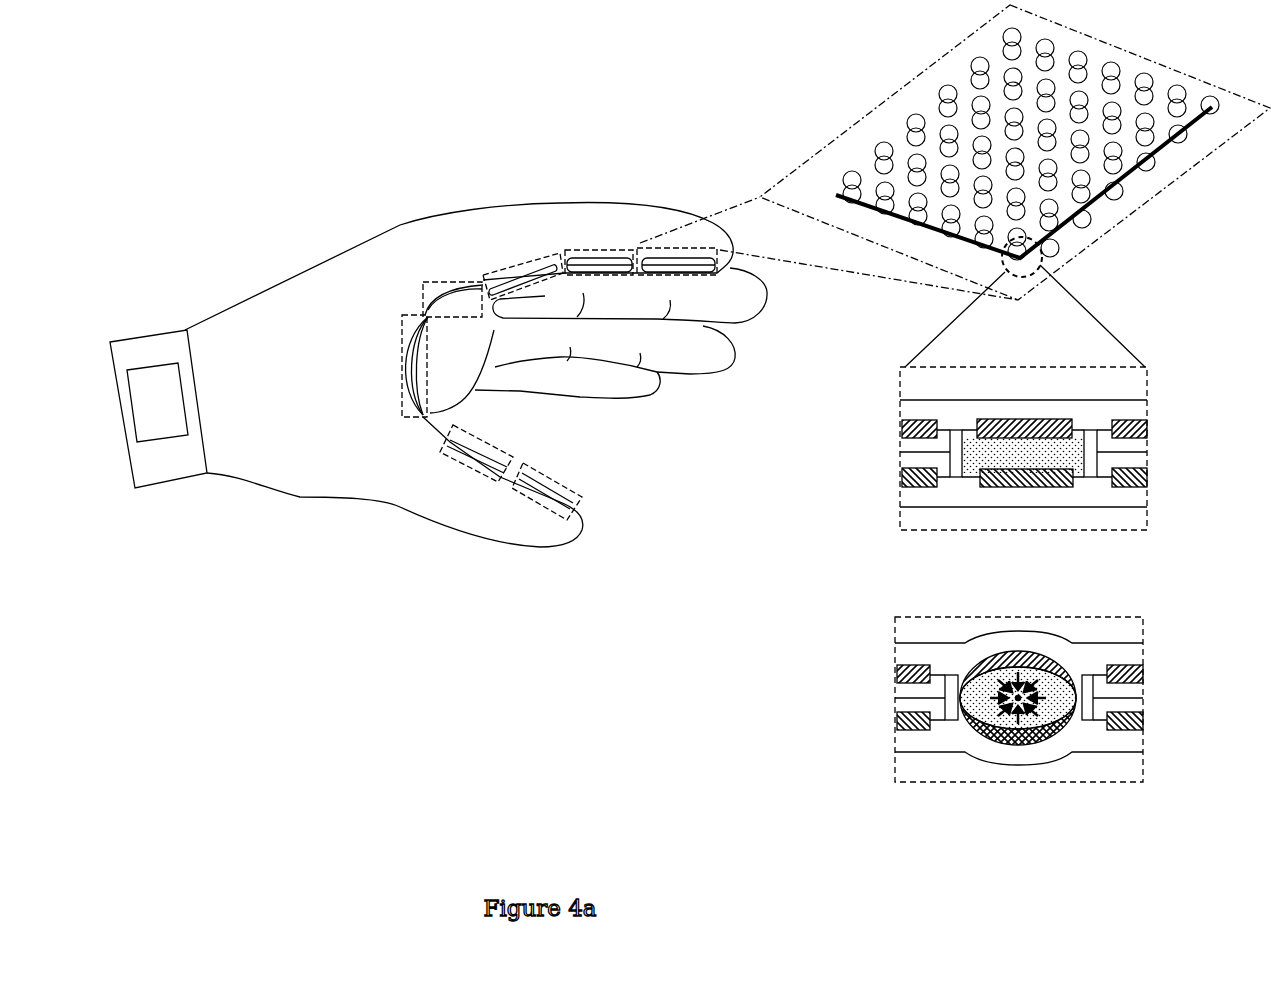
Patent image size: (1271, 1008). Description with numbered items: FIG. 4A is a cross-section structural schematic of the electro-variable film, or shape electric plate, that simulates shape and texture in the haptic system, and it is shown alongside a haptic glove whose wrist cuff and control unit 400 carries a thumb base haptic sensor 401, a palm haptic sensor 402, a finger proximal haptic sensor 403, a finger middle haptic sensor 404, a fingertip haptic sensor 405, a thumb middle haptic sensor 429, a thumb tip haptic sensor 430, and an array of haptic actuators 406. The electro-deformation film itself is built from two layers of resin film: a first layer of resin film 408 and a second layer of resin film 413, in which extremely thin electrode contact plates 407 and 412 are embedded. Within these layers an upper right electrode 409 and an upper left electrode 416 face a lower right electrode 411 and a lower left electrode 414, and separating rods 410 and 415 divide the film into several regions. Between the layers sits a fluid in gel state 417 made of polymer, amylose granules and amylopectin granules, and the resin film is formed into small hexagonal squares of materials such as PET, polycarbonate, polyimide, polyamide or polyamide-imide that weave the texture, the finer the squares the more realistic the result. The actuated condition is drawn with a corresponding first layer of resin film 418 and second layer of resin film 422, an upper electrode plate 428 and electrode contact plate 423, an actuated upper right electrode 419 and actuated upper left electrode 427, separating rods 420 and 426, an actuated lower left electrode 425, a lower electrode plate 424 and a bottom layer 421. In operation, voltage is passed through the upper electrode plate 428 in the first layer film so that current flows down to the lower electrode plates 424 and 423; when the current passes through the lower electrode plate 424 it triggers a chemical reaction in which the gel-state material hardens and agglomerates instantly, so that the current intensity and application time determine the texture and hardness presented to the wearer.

The wrist cuff / control unit 400 is at (162, 402).
The thumb base haptic sensor 401 is at (400, 333).
The palm haptic sensor 402 is at (424, 290).
The finger proximal haptic sensor 403 is at (505, 270).
The finger middle haptic sensor 404 is at (582, 255).
The fingertip haptic sensor 405 is at (662, 253).
The array of haptic actuators 406 is at (1118, 190).
The electrode contact plate 407 is at (1047, 419).
The first layer of resin film 408 is at (1093, 413).
The upper right electrode 409 is at (1147, 428).
The separating rod 410 is at (1097, 452).
The lower right electrode 411 is at (1147, 478).
The electrode contact plate 412 is at (1075, 490).
The second layer of resin film 413 is at (977, 493).
The lower left electrode 414 is at (900, 478).
The separating rod 415 is at (950, 452).
The upper left electrode 416 is at (900, 428).
The fluid in gel state 417 is at (978, 452).
The first layer of resin film 418 is at (1117, 652).
The upper right electrode (actuated) 419 is at (1143, 675).
The separating rod 420 is at (1093, 694).
The bottom layer (actuated) 421 is at (1093, 738).
The second layer of resin film 422 is at (1143, 728).
The electrode contact plate 423 is at (1020, 745).
The lower electrode plate 424 is at (980, 703).
The lower left electrode (actuated) 425 is at (897, 722).
The separating rod 426 is at (950, 697).
The upper left electrode (actuated) 427 is at (897, 672).
The upper electrode plate 428 is at (980, 661).
The thumb middle haptic sensor 429 is at (487, 467).
The thumb tip haptic sensor 430 is at (580, 527).